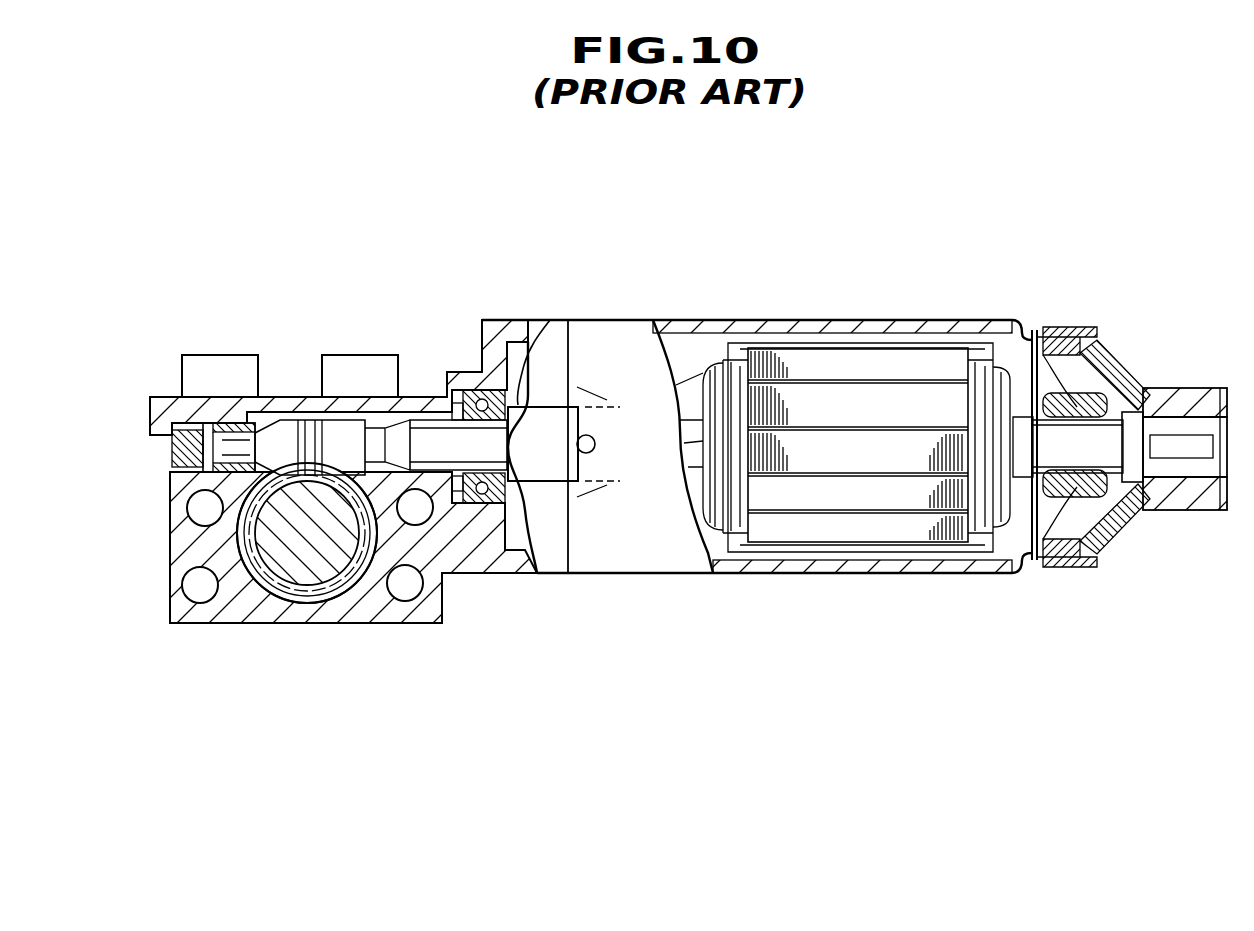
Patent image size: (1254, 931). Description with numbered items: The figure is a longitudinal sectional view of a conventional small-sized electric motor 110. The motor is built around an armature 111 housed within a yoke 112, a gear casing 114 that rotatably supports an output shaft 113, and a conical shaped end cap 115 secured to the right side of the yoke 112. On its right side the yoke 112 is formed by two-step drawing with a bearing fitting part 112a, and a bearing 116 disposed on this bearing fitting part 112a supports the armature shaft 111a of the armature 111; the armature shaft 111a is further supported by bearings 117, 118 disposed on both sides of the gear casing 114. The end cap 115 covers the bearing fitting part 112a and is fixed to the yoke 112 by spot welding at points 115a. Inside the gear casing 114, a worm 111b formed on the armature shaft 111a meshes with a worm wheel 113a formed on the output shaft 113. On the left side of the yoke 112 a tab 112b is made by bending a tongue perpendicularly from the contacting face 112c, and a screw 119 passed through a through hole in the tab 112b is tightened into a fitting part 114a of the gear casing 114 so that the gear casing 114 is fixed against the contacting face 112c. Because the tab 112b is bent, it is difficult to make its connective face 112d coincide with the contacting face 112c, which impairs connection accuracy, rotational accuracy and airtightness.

The small-sized electric motor 110 is at (772, 314).
The armature 111 is at (692, 322).
The armature shaft 111a is at (550, 320).
The worm 111b is at (302, 418).
The yoke 112 is at (955, 330).
The bearing fitting part 112a is at (1105, 385).
The tab 112b is at (580, 500).
The contacting face 112c is at (572, 325).
The connective face 112d is at (565, 450).
The output shaft 113 is at (303, 547).
The worm wheel 113a is at (252, 555).
The gear casing 114 is at (500, 320).
The fitting part 114a is at (553, 557).
The end cap 115 is at (1113, 510).
The spot welding points 115a is at (1105, 342).
The bearing 116 is at (1050, 497).
The bearing 117 is at (466, 388).
The bearing 118 is at (228, 423).
The screw 119 is at (592, 455).